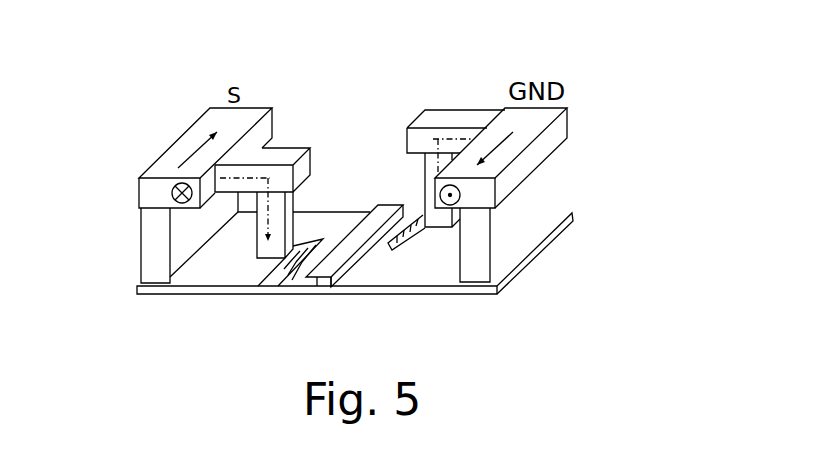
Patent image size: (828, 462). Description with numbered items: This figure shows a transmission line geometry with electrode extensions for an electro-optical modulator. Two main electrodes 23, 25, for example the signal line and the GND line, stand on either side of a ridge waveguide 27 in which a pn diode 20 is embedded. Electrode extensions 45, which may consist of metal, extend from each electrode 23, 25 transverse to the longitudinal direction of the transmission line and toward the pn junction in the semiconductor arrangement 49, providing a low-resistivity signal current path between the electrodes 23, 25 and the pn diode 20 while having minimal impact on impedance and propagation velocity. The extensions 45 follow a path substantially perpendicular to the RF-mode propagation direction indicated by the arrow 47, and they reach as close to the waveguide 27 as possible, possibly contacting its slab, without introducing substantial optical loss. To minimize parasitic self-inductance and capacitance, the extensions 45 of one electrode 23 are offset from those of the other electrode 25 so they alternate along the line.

The pn diode 20 is at (325, 297).
The electrode 23 is at (157, 151).
The electrode 25 is at (573, 117).
The waveguide 27 is at (378, 198).
The electrode extensions 45 is at (282, 147).
The arrow 47 is at (201, 143).
The semiconductor arrangement 49 is at (250, 277).